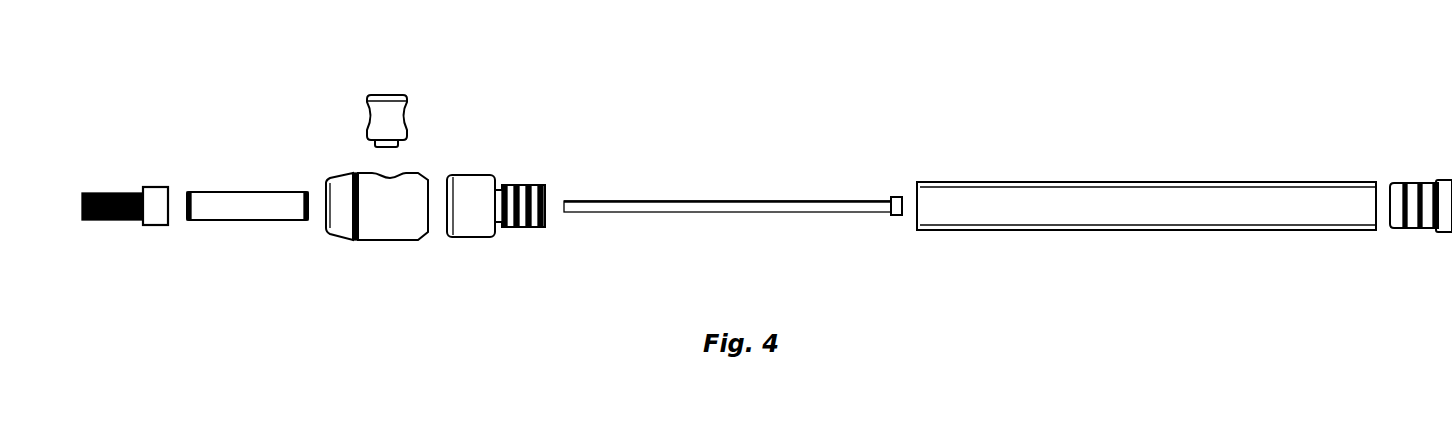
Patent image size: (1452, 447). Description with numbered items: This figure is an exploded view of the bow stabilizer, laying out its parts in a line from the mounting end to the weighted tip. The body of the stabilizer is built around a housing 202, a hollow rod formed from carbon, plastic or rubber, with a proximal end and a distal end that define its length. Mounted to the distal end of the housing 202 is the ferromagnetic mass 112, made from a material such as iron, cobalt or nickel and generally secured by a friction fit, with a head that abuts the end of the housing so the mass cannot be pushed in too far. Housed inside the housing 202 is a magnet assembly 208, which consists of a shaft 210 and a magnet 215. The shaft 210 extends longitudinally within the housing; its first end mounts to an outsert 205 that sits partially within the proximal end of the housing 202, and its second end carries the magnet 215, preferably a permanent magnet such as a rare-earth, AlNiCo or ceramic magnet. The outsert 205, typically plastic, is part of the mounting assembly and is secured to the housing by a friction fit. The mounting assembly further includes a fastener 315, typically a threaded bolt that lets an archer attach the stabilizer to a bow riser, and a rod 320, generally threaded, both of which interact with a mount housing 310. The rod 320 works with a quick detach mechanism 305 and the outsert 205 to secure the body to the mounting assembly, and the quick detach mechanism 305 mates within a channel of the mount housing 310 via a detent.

The ferromagnetic mass 112 is at (1404, 185).
The housing 202 is at (1047, 182).
The outsert 205 is at (472, 175).
The magnet assembly 208 is at (678, 236).
The shaft 210 is at (692, 200).
The magnet 215 is at (897, 195).
The quick detach mechanism 305 is at (368, 110).
The mount housing 310 is at (384, 243).
The fastener 315 is at (153, 226).
The rod 320 is at (220, 192).